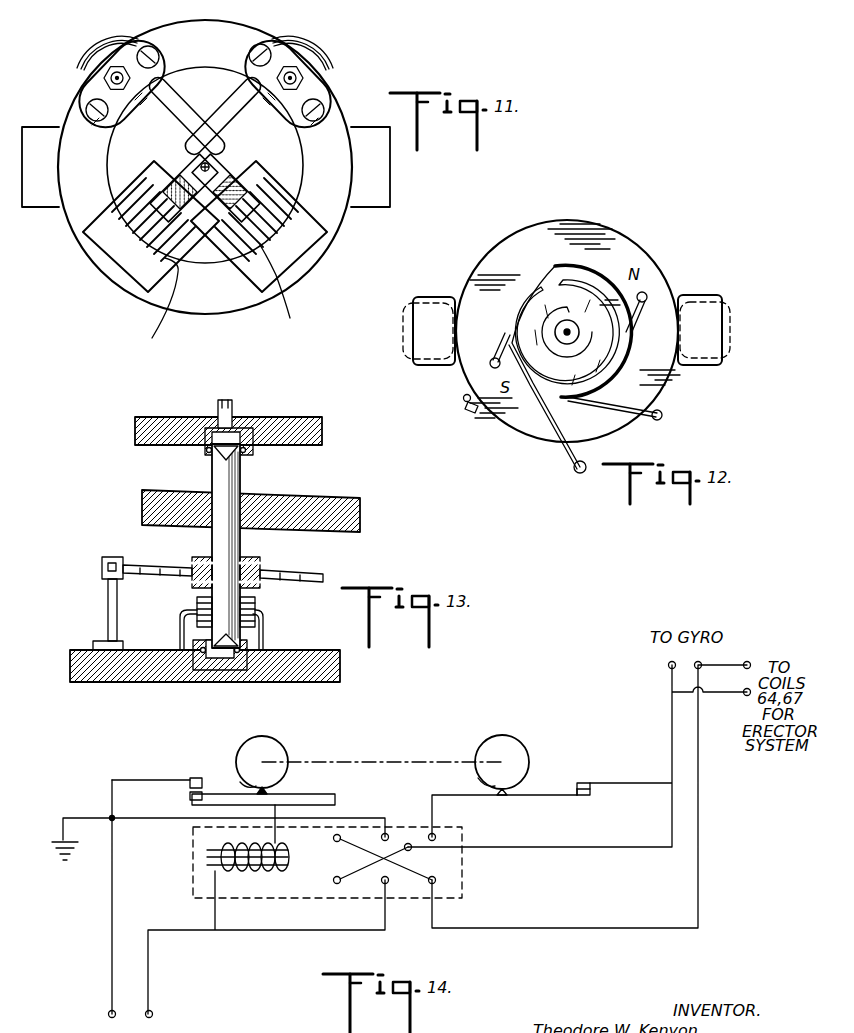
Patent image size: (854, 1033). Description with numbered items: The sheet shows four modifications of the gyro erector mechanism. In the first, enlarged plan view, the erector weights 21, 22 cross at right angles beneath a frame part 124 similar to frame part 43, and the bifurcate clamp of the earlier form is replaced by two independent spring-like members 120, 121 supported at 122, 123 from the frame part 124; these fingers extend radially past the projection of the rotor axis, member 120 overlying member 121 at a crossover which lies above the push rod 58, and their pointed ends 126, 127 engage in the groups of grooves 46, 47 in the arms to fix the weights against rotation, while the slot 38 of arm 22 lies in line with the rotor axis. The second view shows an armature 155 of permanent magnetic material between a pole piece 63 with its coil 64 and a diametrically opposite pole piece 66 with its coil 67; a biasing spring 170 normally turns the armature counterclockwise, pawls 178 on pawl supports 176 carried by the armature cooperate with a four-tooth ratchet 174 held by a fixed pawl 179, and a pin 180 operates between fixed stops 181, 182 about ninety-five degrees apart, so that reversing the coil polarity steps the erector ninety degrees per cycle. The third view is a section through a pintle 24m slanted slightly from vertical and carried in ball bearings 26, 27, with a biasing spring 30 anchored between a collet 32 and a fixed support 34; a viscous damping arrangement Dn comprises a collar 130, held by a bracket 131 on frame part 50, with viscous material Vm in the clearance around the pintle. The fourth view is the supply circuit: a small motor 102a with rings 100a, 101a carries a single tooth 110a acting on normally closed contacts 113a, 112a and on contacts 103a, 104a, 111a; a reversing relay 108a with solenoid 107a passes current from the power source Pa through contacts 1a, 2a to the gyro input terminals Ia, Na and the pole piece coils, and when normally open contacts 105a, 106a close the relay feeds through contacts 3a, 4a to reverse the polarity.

In FIG. 11, the frame part 124 is at (199, 22).
In FIG. 11, the support 123 is at (141, 48).
In FIG. 11, the support 122 is at (318, 112).
In FIG. 11, the spring-like member 120 is at (176, 104).
In FIG. 11, the spring-like member 121 is at (250, 133).
In FIG. 11, the slot 38 is at (222, 192).
In FIG. 11, the weight 22 is at (122, 264).
In FIG. 13, the weight 22 is at (338, 492).
In FIG. 11, the weight 21 is at (306, 257).
In FIG. 11, the pointed end 127 is at (92, 237).
In FIG. 11, the pointed end 126 is at (270, 198).
In FIG. 11, the push rod 58 is at (209, 167).
In FIG. 11, the grooves 47 is at (161, 307).
In FIG. 11, the grooves 46 is at (284, 290).
In FIG. 12, the armature 155 is at (597, 234).
In FIG. 12, the biasing spring 170 is at (548, 284).
In FIG. 12, the ratchet 174 is at (588, 268).
In FIG. 12, the fixed pawl 179 is at (598, 410).
In FIG. 12, the fixed stop 182 is at (655, 420).
In FIG. 12, the pawl support 176 is at (648, 292).
In FIG. 12, the pawl 178 is at (642, 306).
In FIG. 12, the fixed stop 181 is at (463, 401).
In FIG. 12, the pin 180 is at (472, 414).
In FIG. 12, the pole piece 63 is at (416, 362).
In FIG. 12, the coil 64 is at (404, 322).
In FIG. 12, the pole piece 66 is at (717, 360).
In FIG. 12, the coil 67 is at (735, 312).
In FIG. 13, the frame part 43 is at (322, 426).
In FIG. 13, the frame part 50 is at (340, 665).
In FIG. 13, the ball bearing 27 is at (234, 428).
In FIG. 13, the ball bearing 26 is at (232, 668).
In FIG. 13, the pintle 24m is at (241, 474).
In FIG. 13, the collet 32 is at (248, 566).
In FIG. 13, the biasing spring 30 is at (320, 574).
In FIG. 13, the fixed support 34 is at (106, 618).
In FIG. 13, the collar 130 is at (196, 604).
In FIG. 13, the bracket 131 is at (190, 623).
In FIG. 13, the viscous damping arrangement Dn is at (262, 608).
In FIG. 13, the viscous material Vm is at (258, 626).
In FIG. 14, the ring 100a is at (272, 752).
In FIG. 14, the second ring 101a is at (510, 749).
In FIG. 14, the small motor 102a is at (392, 760).
In FIG. 14, the contact 103a is at (245, 781).
In FIG. 14, the contact 104a is at (270, 791).
In FIG. 14, the switch contact 105a is at (190, 796).
In FIG. 14, the switch contact 106a is at (190, 780).
In FIG. 14, the solenoid 107a is at (207, 857).
In FIG. 14, the reversing relay 108a is at (275, 898).
In FIG. 14, the contact 1a is at (436, 838).
In FIG. 14, the contact 2a is at (436, 881).
In FIG. 14, the contact 3a is at (333, 838).
In FIG. 14, the contact 4a is at (333, 880).
In FIG. 14, the tooth 110a is at (480, 781).
In FIG. 14, the contact 111a is at (510, 792).
In FIG. 14, the switch contact 112a is at (583, 795).
In FIG. 14, the switch contact 113a is at (583, 783).
In FIG. 14, the power source Pa is at (131, 1005).
In FIG. 14, the gyro input terminal Ia is at (668, 665).
In FIG. 14, the gyro input terminal Na is at (703, 663).